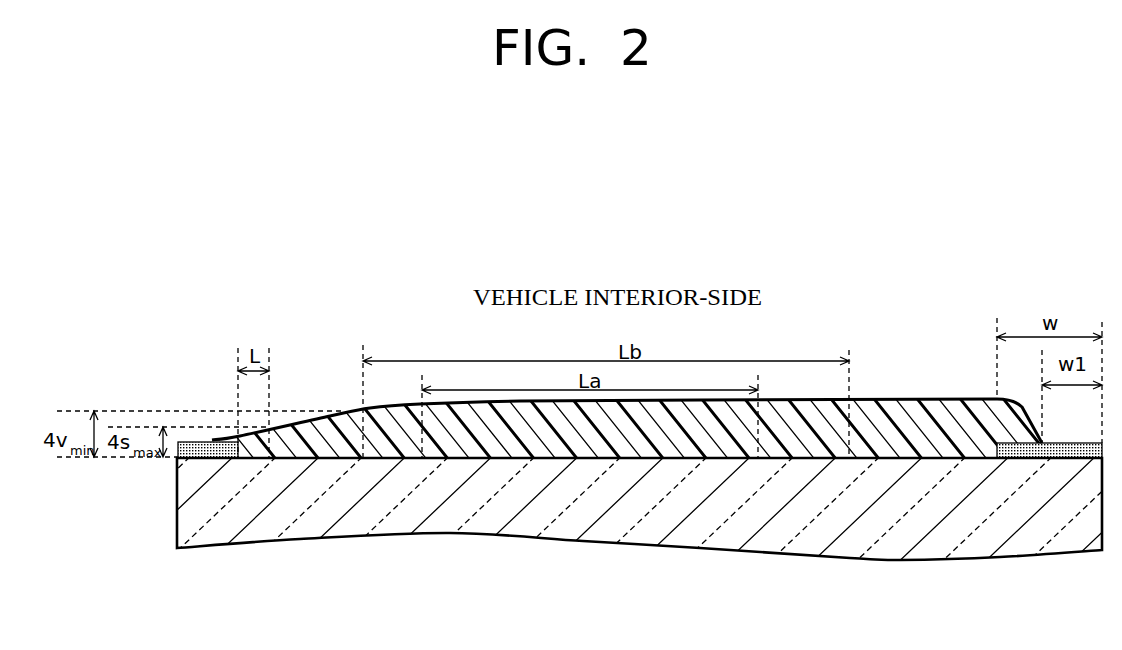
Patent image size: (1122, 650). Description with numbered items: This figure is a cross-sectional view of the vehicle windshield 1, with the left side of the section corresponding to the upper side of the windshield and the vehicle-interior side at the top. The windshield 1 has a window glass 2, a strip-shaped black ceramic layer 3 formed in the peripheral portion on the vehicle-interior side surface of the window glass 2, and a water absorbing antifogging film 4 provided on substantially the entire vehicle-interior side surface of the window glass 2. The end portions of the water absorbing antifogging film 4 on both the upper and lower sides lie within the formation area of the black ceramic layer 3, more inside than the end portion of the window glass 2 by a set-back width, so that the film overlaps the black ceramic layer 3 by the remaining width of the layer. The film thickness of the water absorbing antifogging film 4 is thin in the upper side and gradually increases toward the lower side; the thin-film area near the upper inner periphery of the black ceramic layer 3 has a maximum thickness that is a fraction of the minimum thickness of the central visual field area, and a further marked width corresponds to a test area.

The vehicle windshield 1 is at (340, 326).
The window glass 2 is at (583, 513).
The black ceramic layer 3 is at (205, 440).
The water absorbing antifogging film 4 is at (923, 418).